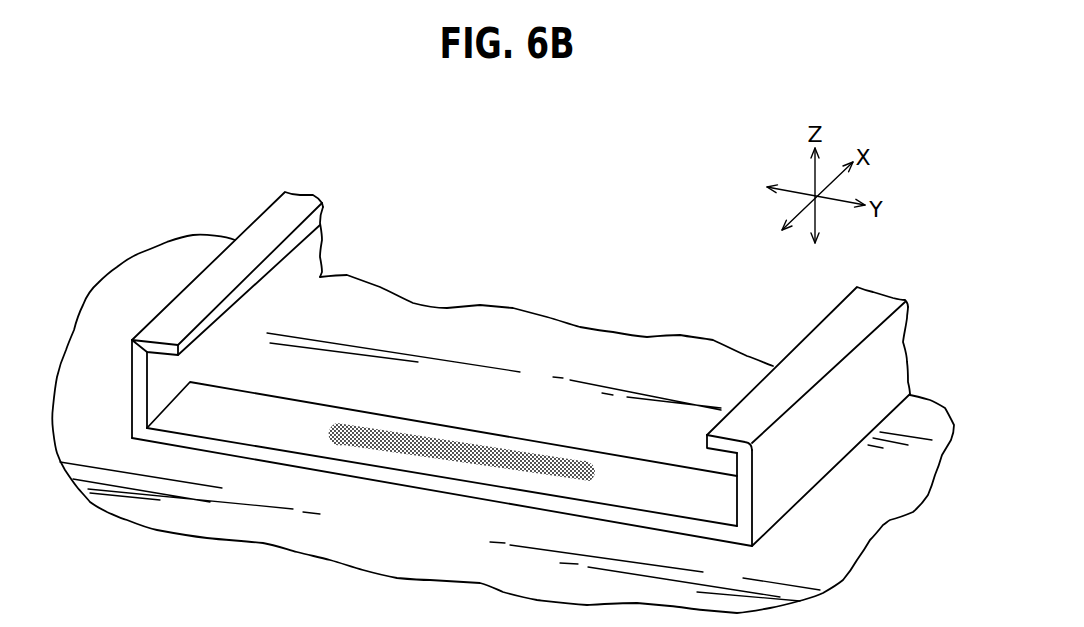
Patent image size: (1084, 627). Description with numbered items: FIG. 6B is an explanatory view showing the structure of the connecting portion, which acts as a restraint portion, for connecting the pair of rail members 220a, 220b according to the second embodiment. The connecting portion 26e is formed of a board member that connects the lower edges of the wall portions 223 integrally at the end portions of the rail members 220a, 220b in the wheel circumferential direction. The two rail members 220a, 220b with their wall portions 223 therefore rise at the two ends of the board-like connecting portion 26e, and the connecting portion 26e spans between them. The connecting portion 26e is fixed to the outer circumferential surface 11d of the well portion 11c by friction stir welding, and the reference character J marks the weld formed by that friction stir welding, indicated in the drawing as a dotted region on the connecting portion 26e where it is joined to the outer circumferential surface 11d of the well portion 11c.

The well portion 11c is at (537, 338).
The outer circumferential surface 11d is at (496, 425).
The wall portion 223 is at (282, 280).
The rail member 220a is at (745, 492).
The rail member 220b is at (140, 392).
The connecting portion 26e is at (635, 488).
The weld J is at (468, 457).